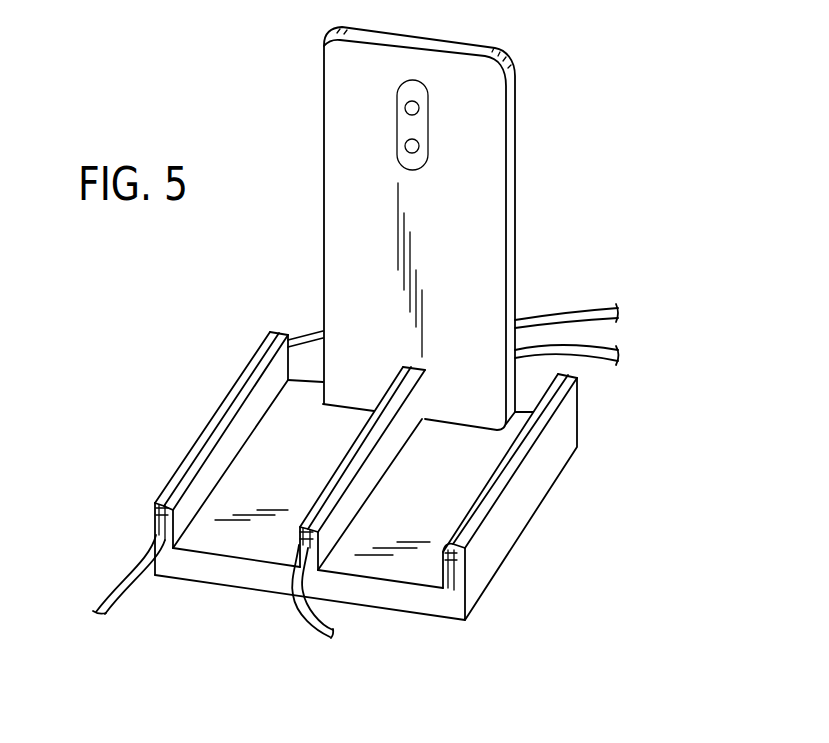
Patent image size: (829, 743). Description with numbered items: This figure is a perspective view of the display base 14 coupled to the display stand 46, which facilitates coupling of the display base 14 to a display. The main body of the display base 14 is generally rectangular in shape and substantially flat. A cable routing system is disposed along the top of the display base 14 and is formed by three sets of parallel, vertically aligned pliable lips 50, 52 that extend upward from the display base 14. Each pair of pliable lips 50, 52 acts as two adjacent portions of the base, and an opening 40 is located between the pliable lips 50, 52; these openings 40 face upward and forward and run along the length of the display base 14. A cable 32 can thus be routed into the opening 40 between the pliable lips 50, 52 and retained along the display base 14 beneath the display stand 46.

The display base 14 is at (190, 397).
The cable 32 is at (104, 566).
The opening 40 is at (155, 522).
The display stand 46 is at (586, 95).
The pliable lip 50 is at (227, 426).
The pliable lip 52 is at (256, 358).